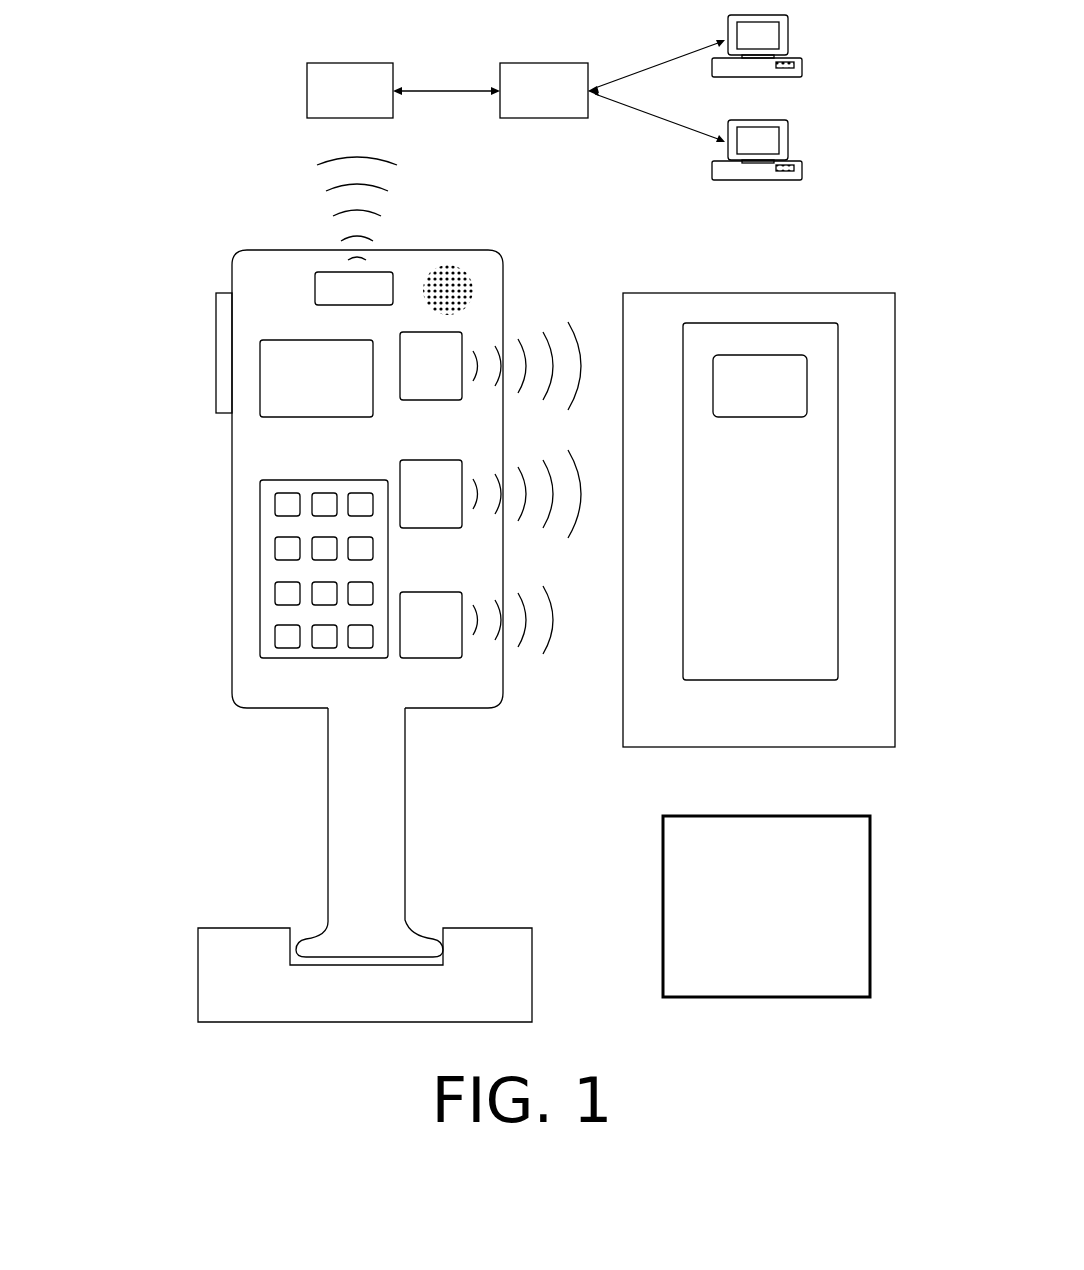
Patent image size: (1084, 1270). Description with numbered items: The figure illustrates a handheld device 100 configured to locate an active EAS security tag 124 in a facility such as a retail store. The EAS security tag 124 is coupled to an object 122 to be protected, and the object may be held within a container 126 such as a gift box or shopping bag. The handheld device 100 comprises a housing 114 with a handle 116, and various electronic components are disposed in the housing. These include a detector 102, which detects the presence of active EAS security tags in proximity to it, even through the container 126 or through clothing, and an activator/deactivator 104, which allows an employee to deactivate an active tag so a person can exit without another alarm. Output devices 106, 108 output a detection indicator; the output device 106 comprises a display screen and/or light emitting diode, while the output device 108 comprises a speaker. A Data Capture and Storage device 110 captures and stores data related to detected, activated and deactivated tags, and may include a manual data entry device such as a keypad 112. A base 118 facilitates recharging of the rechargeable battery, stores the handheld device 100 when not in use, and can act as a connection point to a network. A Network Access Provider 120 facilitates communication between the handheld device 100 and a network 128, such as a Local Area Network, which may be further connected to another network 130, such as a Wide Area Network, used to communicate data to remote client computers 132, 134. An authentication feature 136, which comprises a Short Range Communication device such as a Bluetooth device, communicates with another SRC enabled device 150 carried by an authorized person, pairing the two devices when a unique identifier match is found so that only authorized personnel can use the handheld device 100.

The handheld device 100 is at (244, 249).
The detector 102 is at (462, 400).
The activator/deactivator 104 is at (462, 528).
The output device 106 is at (272, 417).
The output device 108 is at (476, 285).
The Data Capture and Storage device 110 is at (462, 658).
The keypad 112 is at (260, 568).
The housing 114 is at (457, 708).
The handle 116 is at (380, 807).
The base 118 is at (532, 962).
The Network Access Provider 120 is at (326, 272).
The object 122 is at (838, 520).
The EAS security tag 124 is at (807, 393).
The container 126 is at (715, 747).
The network 128 is at (307, 118).
The network 130 is at (500, 118).
The client computer 132 is at (802, 77).
The client computer 134 is at (802, 180).
The authentication feature 136 is at (214, 347).
The SRC enabled device 150 is at (766, 906).